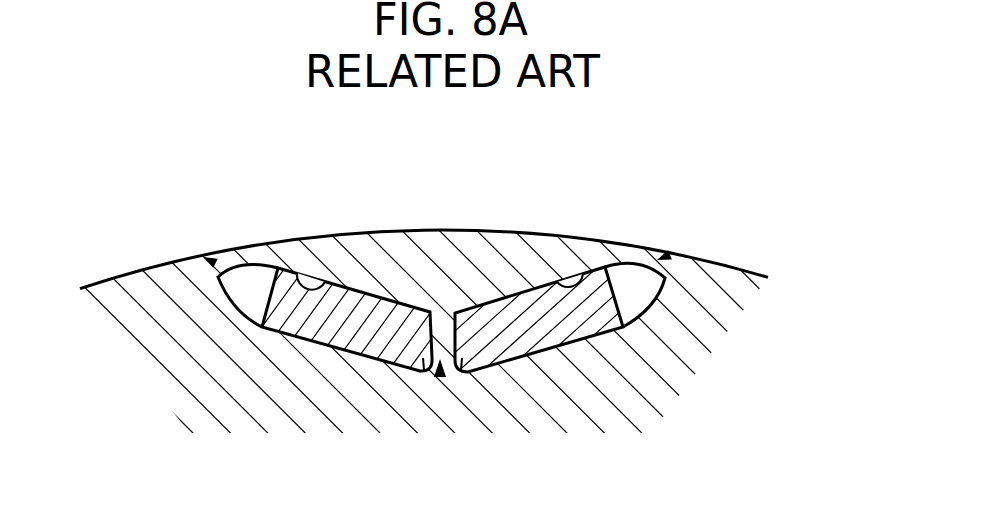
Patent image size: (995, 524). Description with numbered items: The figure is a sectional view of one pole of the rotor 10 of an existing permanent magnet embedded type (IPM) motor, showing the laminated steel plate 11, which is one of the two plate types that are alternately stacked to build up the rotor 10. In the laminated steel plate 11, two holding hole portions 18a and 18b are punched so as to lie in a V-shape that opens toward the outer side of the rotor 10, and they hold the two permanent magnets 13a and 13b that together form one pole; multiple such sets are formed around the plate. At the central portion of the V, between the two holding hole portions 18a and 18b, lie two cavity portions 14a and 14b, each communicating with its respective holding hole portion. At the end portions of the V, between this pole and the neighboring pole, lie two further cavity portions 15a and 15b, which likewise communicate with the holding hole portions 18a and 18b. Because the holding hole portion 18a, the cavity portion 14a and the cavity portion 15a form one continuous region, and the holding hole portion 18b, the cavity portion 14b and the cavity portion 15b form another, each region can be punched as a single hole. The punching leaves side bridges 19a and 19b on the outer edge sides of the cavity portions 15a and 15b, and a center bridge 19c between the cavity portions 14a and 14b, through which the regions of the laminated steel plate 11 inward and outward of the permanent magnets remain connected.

The rotor 10 is at (768, 250).
The laminated steel plate 11 is at (127, 317).
The permanent magnet 13a is at (365, 305).
The permanent magnet 13b is at (525, 305).
The cavity portion 14a is at (425, 368).
The cavity portion 14b is at (458, 368).
The cavity portion 15a is at (253, 285).
The cavity portion 15b is at (635, 282).
The holding hole portion 18a is at (300, 283).
The holding hole portion 18b is at (583, 280).
The side bridge 19a is at (203, 257).
The side bridge 19b is at (672, 252).
The center bridge 19c is at (440, 377).